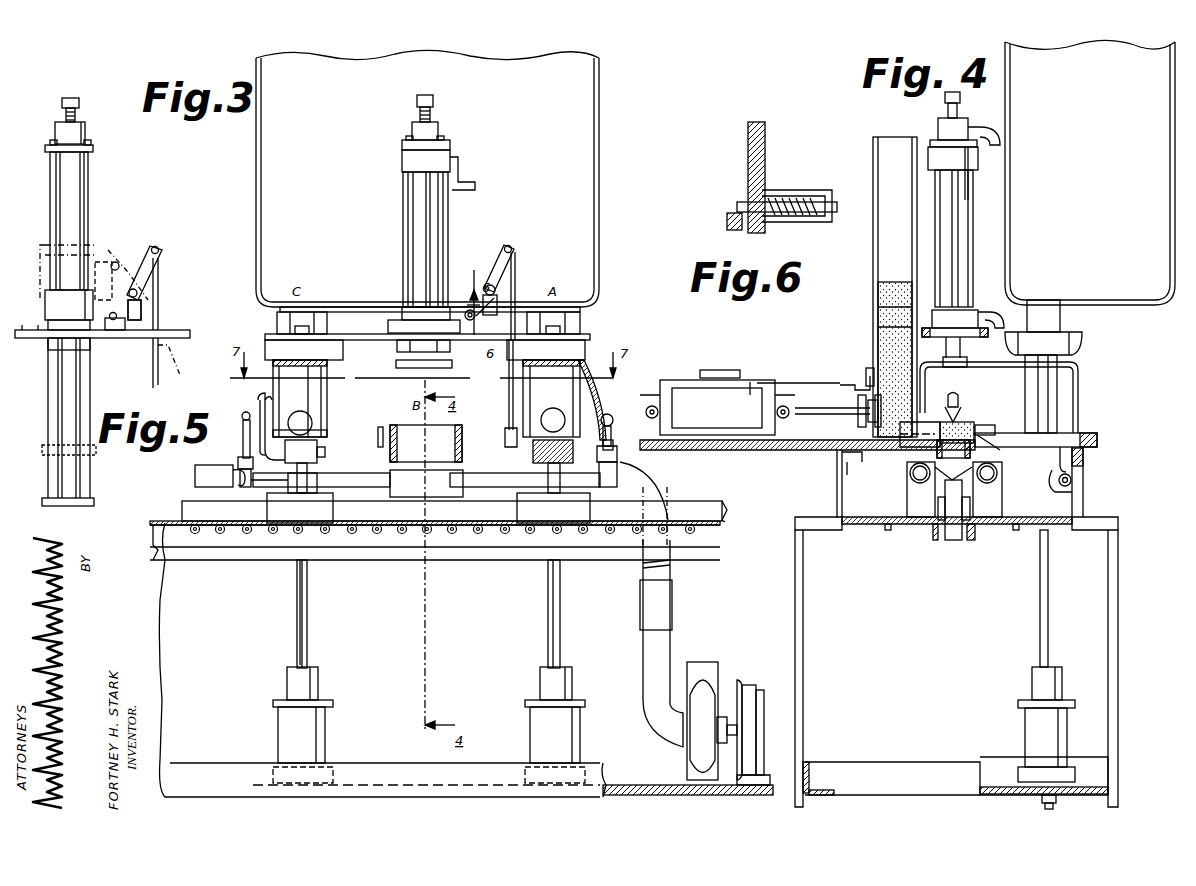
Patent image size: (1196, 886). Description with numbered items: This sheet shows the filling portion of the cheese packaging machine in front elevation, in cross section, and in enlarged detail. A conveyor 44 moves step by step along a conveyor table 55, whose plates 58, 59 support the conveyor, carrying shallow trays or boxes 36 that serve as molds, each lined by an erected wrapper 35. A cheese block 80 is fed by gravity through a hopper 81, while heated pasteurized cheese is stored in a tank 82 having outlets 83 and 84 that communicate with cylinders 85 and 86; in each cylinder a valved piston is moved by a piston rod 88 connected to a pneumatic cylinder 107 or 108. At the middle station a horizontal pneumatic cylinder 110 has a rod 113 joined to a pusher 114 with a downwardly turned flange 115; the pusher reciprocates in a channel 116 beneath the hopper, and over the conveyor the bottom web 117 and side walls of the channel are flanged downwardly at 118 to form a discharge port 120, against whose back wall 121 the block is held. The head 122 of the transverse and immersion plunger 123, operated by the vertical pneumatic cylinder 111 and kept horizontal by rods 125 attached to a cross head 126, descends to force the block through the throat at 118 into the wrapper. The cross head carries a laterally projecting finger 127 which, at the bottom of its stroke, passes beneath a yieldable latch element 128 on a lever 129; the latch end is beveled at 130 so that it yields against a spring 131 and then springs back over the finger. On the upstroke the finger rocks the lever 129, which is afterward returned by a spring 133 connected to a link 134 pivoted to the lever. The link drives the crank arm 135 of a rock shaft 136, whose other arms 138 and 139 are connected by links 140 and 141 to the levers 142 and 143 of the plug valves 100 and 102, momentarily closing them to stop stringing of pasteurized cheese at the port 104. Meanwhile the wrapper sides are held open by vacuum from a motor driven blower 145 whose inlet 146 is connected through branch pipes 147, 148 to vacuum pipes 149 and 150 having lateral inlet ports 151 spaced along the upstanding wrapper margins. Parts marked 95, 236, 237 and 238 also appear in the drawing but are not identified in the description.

In FIG. 3, the erected wrapper 35 is at (462, 480).
In FIG. 4, the erected wrapper 35 is at (948, 542).
In FIG. 3, the shallow tray or box 36 is at (290, 562).
In FIG. 4, the shallow tray or box 36 is at (960, 542).
In FIG. 3, the conveyor 44 is at (698, 515).
In FIG. 4, the conveyor 44 is at (953, 542).
In FIG. 4, the conveyor table 55 is at (865, 530).
In FIG. 4, the plate 58 is at (970, 540).
In FIG. 4, the plate 59 is at (940, 522).
In FIG. 4, the cheese block 80 is at (875, 328).
In FIG. 4, the hopper 81 is at (890, 260).
In FIG. 3, the tank 82 is at (585, 178).
In FIG. 4, the tank 82 is at (1090, 172).
In FIG. 3, the outlet 83 is at (590, 322).
In FIG. 3, the outlet 84 is at (283, 311).
In FIG. 4, the outlet 84 is at (1063, 318).
In FIG. 3, the cylinder 85 is at (540, 393).
In FIG. 3, the cylinder 86 is at (310, 398).
In FIG. 4, the cylinder 86 is at (1057, 388).
In FIG. 3, the piston rod 88 is at (307, 625).
In FIG. 4, the piston rod 88 is at (1040, 636).
In FIG. 3, the ball valve 95 is at (553, 408).
In FIG. 3, the plug valve 100 is at (575, 448).
In FIG. 3, the plug valve 102 is at (310, 445).
In FIG. 3, the port 104 is at (310, 467).
In FIG. 3, the pneumatic cylinder 107 is at (568, 720).
In FIG. 3, the pneumatic cylinder 108 is at (315, 720).
In FIG. 4, the pneumatic cylinder 108 is at (1045, 727).
In FIG. 3, the pneumatic cylinder 110 is at (676, 382).
In FIG. 5, the pneumatic cylinder 111 is at (72, 210).
In FIG. 3, the pneumatic cylinder 111 is at (425, 233).
In FIG. 4, the pneumatic cylinder 111 is at (945, 230).
In FIG. 4, the rod 113 is at (823, 408).
In FIG. 4, the pusher 114 is at (900, 430).
In FIG. 4, the downwardly turned flange 115 is at (920, 447).
In FIG. 4, the channel 116 is at (810, 442).
In FIG. 4, the bottom web 117 is at (830, 450).
In FIG. 4, the downward flange 118 is at (908, 465).
In FIG. 3, the discharge port 120 is at (426, 443).
In FIG. 4, the discharge port 120 is at (950, 486).
In FIG. 3, the back wall 121 is at (402, 432).
In FIG. 4, the back wall 121 is at (978, 425).
In FIG. 5, the head 122 is at (95, 502).
In FIG. 3, the head 122 is at (408, 369).
In FIG. 4, the head 122 is at (960, 368).
In FIG. 5, the transverse and immersion plunger 123 is at (68, 400).
In FIG. 3, the transverse and immersion plunger 123 is at (410, 355).
In FIG. 4, the transverse and immersion plunger 123 is at (972, 318).
In FIG. 5, the rods 125 is at (88, 476).
In FIG. 3, the rods 125 is at (445, 270).
In FIG. 4, the rods 125 is at (960, 275).
In FIG. 5, the cross head 126 is at (50, 297).
In FIG. 3, the cross head 126 is at (400, 165).
In FIG. 4, the cross head 126 is at (980, 160).
In FIG. 5, the laterally projecting finger 127 is at (114, 258).
In FIG. 6, the laterally projecting finger 127 is at (727, 220).
In FIG. 5, the yieldable latch element 128 is at (113, 312).
In FIG. 3, the yieldable latch element 128 is at (468, 308).
In FIG. 6, the yieldable latch element 128 is at (745, 198).
In FIG. 5, the lever 129 is at (150, 280).
In FIG. 3, the lever 129 is at (494, 250).
In FIG. 6, the lever 129 is at (780, 122).
In FIG. 6, the beveled end 130 is at (737, 206).
In FIG. 6, the spring 131 is at (795, 195).
In FIG. 3, the spring 133 is at (602, 360).
In FIG. 5, the link 134 is at (160, 360).
In FIG. 3, the link 134 is at (508, 373).
In FIG. 3, the crank arm 135 is at (500, 482).
In FIG. 3, the rock shaft 136 is at (382, 482).
In FIG. 4, the rock shaft 136 is at (1074, 498).
In FIG. 3, the arm 138 is at (655, 492).
In FIG. 3, the arm 139 is at (222, 468).
In FIG. 4, the arm 139 is at (1072, 470).
In FIG. 3, the link 140 is at (612, 462).
In FIG. 3, the link 141 is at (244, 432).
In FIG. 4, the link 141 is at (1085, 455).
In FIG. 3, the lever 142 is at (610, 412).
In FIG. 4, the lever 142 is at (948, 400).
In FIG. 3, the lever 143 is at (256, 404).
In FIG. 3, the motor driven blower 145 is at (718, 690).
In FIG. 3, the inlet 146 is at (682, 742).
In FIG. 3, the branch pipe 147 is at (672, 575).
In FIG. 3, the branch pipe 148 is at (672, 493).
In FIG. 4, the vacuum pipe 149 is at (916, 482).
In FIG. 4, the vacuum pipe 150 is at (998, 480).
In FIG. 4, the lateral inlet ports 151 is at (933, 527).
In FIG. 4, the lever 236 is at (856, 372).
In FIG. 4, the link rod 237 is at (810, 380).
In FIG. 4, the pivot 238 is at (760, 380).